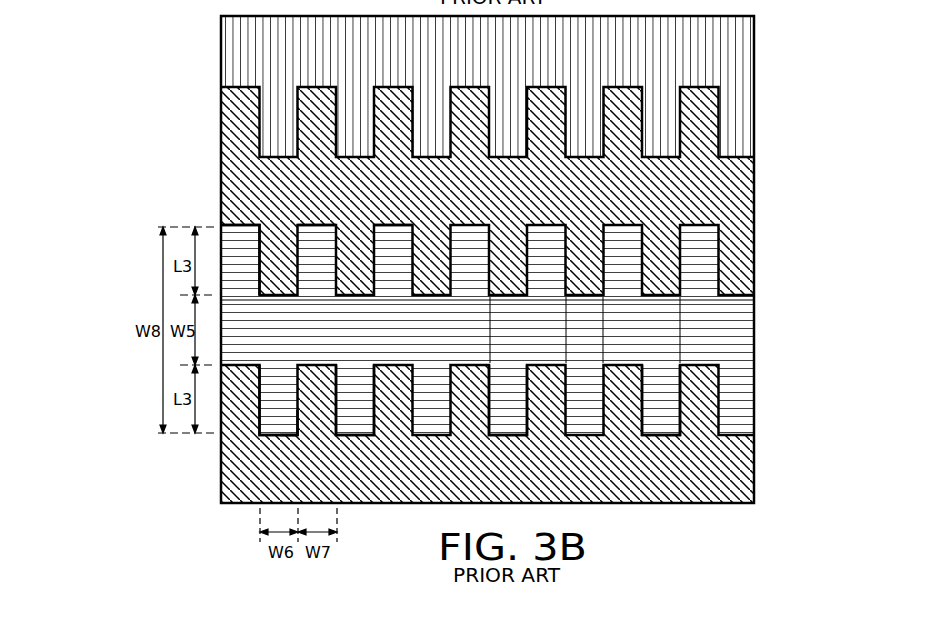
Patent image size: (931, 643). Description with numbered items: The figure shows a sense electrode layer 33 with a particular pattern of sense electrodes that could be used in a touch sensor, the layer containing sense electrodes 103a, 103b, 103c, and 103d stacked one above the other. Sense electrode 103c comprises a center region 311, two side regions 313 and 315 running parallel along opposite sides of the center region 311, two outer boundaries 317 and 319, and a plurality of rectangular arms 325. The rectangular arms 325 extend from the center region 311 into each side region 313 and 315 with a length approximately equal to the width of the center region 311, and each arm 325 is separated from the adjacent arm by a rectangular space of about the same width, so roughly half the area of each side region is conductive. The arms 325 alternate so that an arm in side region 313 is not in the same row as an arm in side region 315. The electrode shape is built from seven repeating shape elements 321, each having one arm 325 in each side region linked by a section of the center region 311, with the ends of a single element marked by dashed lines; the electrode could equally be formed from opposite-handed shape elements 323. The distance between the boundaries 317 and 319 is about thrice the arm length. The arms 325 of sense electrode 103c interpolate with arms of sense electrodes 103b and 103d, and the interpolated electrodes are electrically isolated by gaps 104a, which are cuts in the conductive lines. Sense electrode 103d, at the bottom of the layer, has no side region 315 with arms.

The prior art semiconductor structure 33 is at (170, 47).
The sense electrode 103a is at (755, 63).
The sense electrode 103b is at (755, 195).
The sense electrode 103c is at (755, 335).
The sense electrode 103d is at (755, 437).
The gap 104a is at (755, 150).
The center region 311 is at (247, 337).
The side region 313 is at (245, 248).
The side region 315 is at (277, 425).
The outer boundary 317 is at (315, 222).
The outer boundary 319 is at (290, 436).
The repeating shape element 321 is at (663, 415).
The shape element 323 is at (505, 423).
The rectangular arm 325 is at (395, 222).